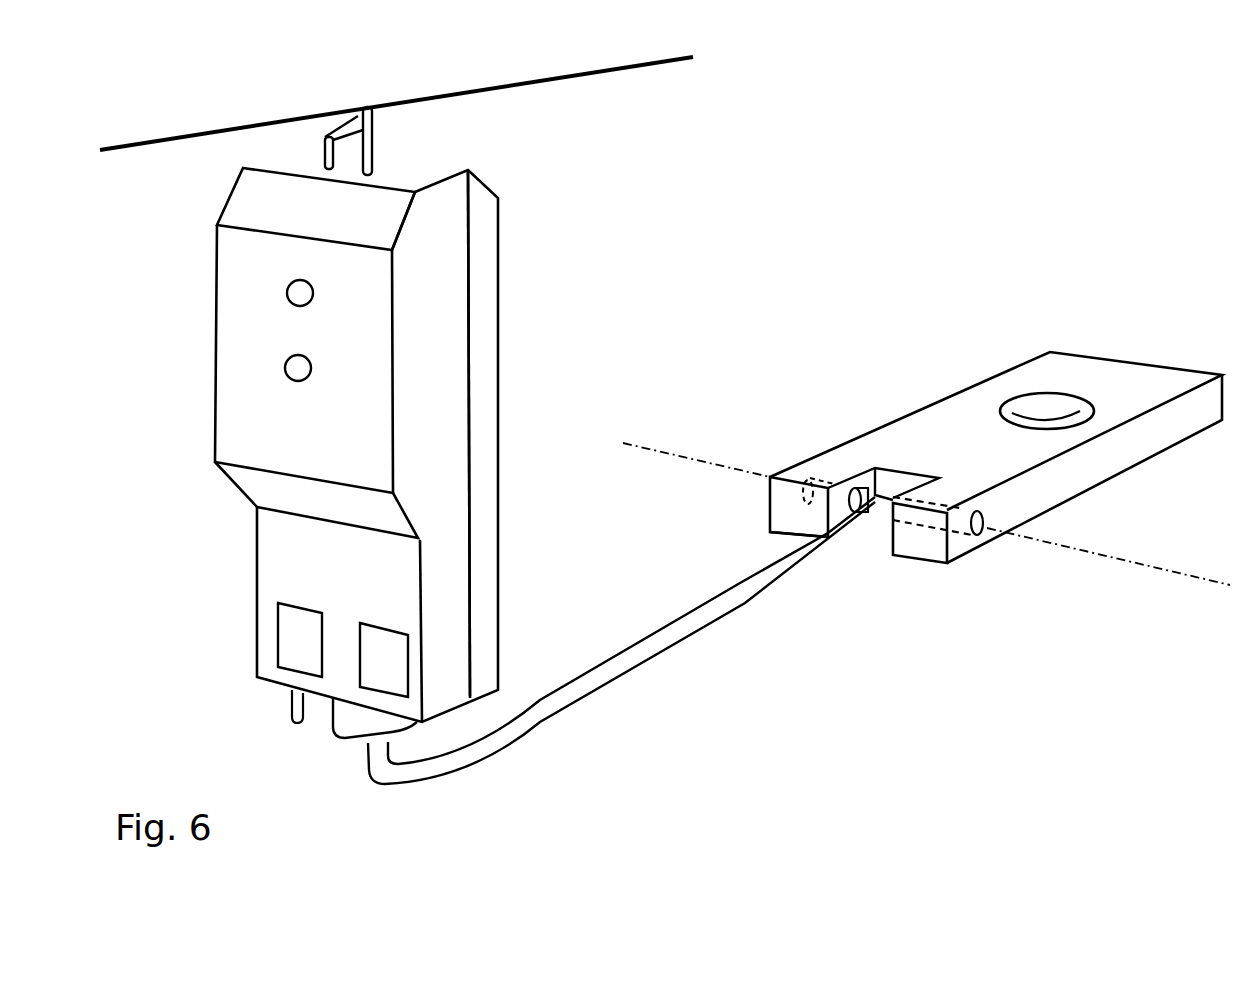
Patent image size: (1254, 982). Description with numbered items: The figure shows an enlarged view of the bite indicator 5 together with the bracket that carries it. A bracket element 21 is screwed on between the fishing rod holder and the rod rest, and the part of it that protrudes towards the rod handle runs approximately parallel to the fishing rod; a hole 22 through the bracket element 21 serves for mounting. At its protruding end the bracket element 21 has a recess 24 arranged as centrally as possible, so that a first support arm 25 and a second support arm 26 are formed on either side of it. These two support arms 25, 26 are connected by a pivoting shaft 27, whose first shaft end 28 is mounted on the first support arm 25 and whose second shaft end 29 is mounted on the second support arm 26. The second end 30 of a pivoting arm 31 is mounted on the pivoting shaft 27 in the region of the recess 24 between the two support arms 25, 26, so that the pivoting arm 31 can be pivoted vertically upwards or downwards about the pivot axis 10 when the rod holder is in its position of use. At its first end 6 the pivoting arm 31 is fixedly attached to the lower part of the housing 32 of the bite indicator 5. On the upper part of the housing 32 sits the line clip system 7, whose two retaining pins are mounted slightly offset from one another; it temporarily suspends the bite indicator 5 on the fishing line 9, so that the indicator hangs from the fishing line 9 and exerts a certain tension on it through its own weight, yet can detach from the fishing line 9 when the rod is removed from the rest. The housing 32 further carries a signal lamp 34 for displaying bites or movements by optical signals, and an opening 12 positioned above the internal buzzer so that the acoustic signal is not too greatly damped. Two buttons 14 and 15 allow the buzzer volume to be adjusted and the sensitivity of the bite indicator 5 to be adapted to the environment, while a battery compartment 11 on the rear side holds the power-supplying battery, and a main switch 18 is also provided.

The bite indicator 5 is at (440, 585).
The first end 6 is at (373, 743).
The line clip system 7 is at (374, 137).
The fishing line 9 is at (580, 85).
The pivot axis 10 is at (1197, 578).
The battery compartment 11 is at (487, 383).
The opening 12 is at (288, 295).
The button 14 is at (305, 652).
The button 15 is at (387, 668).
The main switch 18 is at (292, 710).
The bracket element 21 is at (962, 415).
The hole 22 is at (1050, 418).
The recess 24 is at (883, 477).
The first support arm 25 is at (778, 503).
The second support arm 26 is at (907, 547).
The pivoting shaft 27 is at (770, 534).
The first shaft end 28 is at (805, 480).
The second shaft end 29 is at (983, 540).
The second end 30 is at (877, 500).
The pivoting arm 31 is at (668, 640).
The housing 32 is at (427, 282).
The signal lamp 34 is at (296, 371).